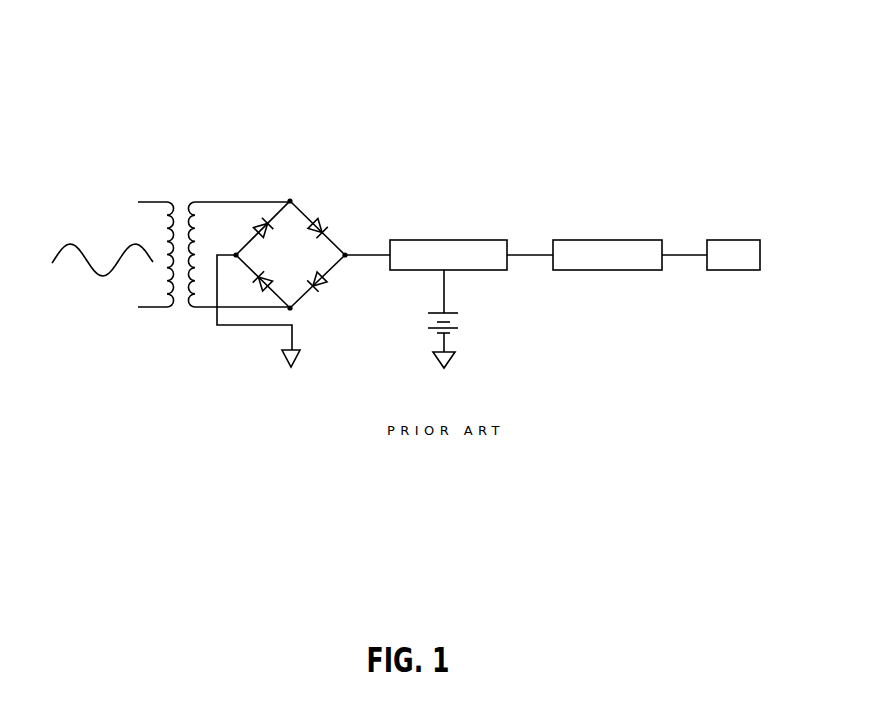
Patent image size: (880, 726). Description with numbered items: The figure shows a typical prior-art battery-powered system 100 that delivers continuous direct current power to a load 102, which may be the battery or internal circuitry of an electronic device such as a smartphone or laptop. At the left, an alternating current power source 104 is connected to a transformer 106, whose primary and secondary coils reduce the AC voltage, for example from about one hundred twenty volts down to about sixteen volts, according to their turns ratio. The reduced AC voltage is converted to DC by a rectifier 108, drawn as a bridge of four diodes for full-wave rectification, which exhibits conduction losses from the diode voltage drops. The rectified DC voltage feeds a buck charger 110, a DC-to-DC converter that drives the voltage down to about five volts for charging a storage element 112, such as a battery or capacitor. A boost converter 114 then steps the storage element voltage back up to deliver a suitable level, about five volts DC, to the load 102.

The battery-powered system 100 is at (102, 120).
The load 102 is at (740, 240).
The alternating current power source 104 is at (107, 220).
The transformer 106 is at (180, 202).
The rectifier 108 is at (295, 223).
The buck charger 110 is at (445, 240).
The storage element 112 is at (460, 317).
The boost converter 114 is at (597, 240).